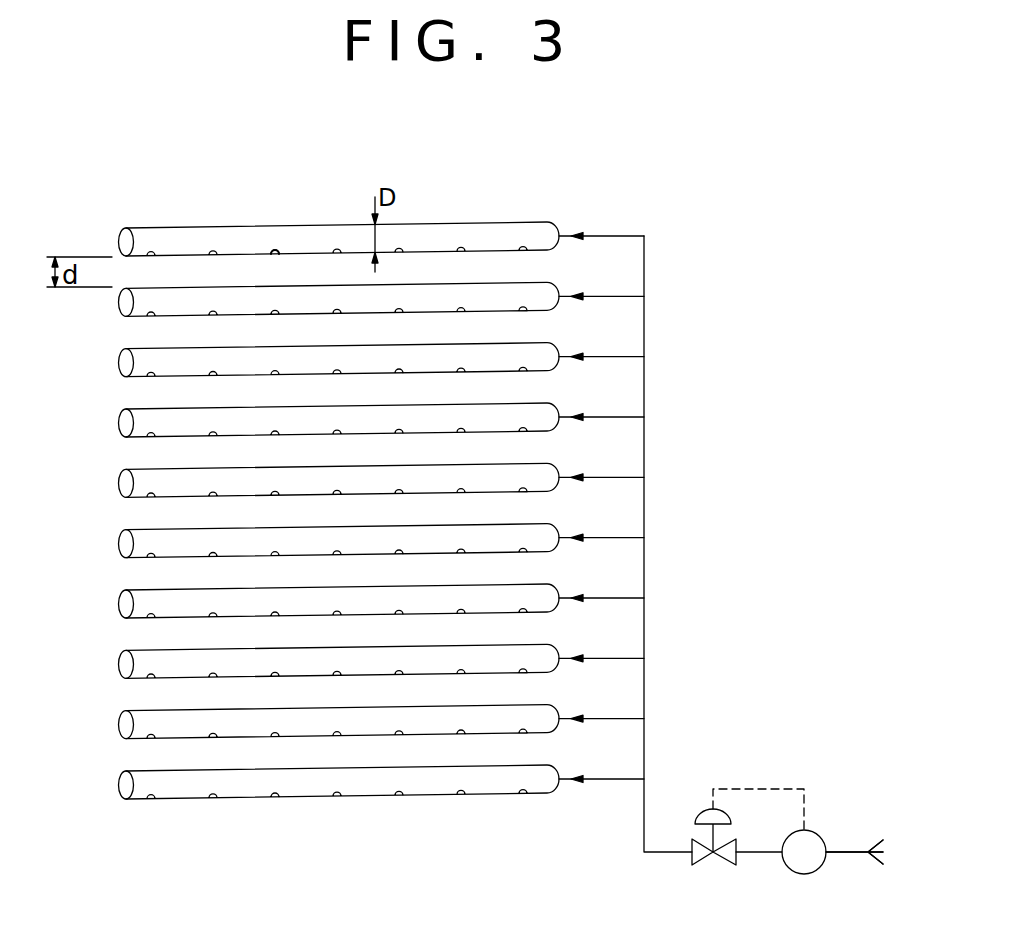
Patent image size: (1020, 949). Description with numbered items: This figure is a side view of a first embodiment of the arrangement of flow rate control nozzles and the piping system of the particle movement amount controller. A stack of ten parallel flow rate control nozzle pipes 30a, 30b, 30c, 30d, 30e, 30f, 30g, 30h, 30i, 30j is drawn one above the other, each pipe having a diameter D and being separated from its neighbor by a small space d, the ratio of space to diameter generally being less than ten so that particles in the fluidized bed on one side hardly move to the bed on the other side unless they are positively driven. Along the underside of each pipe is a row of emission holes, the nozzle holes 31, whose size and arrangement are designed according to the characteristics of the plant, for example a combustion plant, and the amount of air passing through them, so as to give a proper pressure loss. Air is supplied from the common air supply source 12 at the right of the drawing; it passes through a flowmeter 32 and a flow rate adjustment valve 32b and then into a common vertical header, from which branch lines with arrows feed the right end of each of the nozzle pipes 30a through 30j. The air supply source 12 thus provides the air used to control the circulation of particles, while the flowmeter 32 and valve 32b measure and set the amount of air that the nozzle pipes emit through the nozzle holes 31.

The air supply source 12 is at (848, 850).
The flow rate control nozzle pipe 30a is at (118, 240).
The flow rate control nozzle pipe 30b is at (344, 308).
The flow rate control nozzle pipe 30c is at (344, 363).
The flow rate control nozzle pipe 30d is at (344, 423).
The flow rate control nozzle pipe 30e is at (344, 483).
The flow rate control nozzle pipe 30f is at (344, 544).
The flow rate control nozzle pipe 30g is at (344, 604).
The flow rate control nozzle pipe 30h is at (344, 664).
The flow rate control nozzle pipe 30i is at (344, 725).
The flow rate control nozzle pipe 30j is at (344, 785).
The nozzle hole 31 is at (278, 252).
The flowmeter 32 is at (801, 875).
The flow rate adjustment valve 32b is at (700, 863).